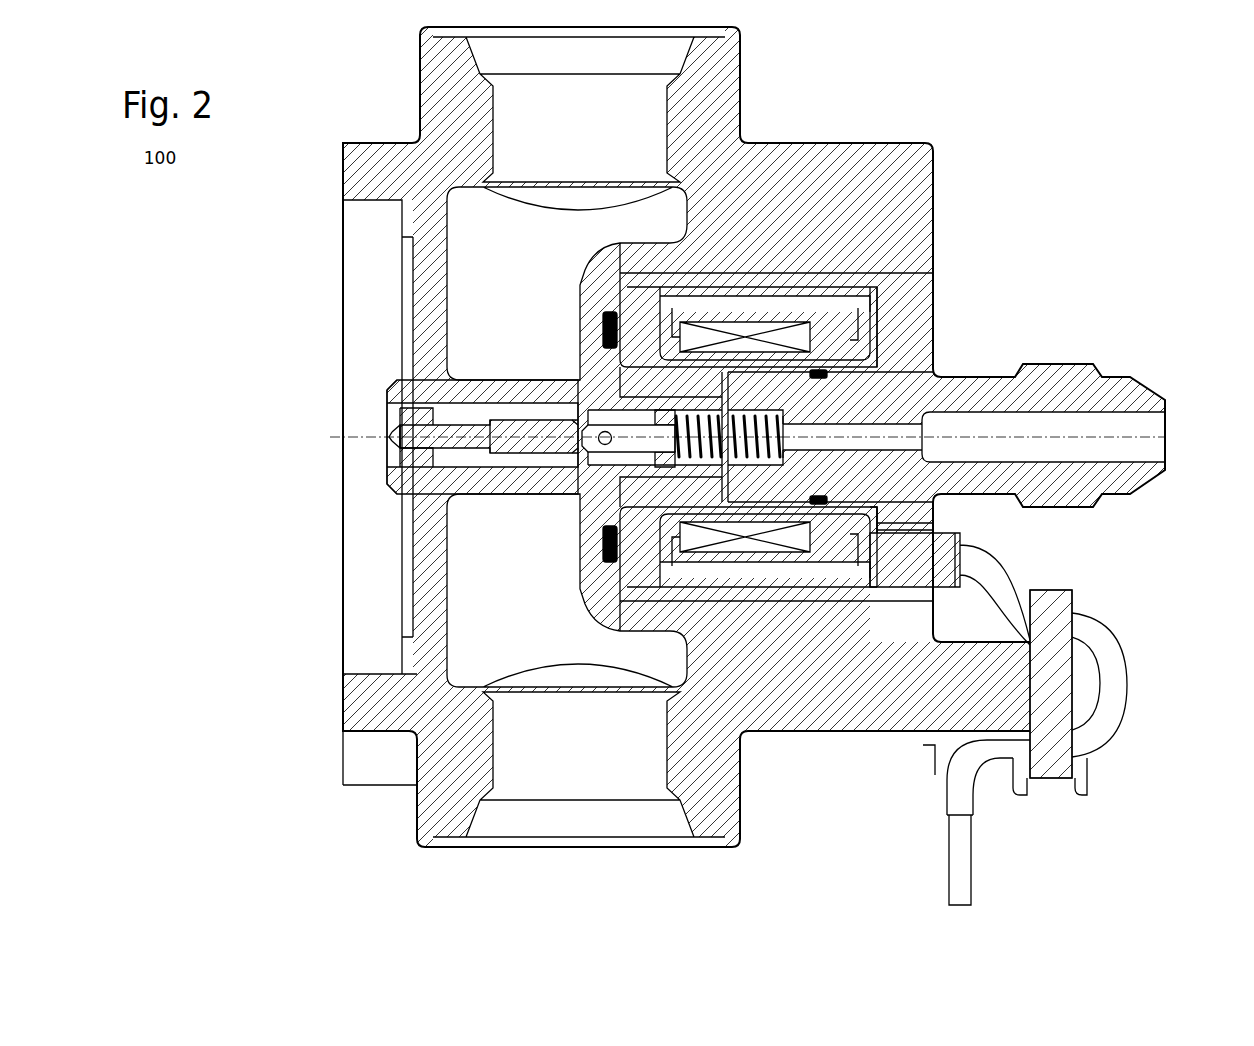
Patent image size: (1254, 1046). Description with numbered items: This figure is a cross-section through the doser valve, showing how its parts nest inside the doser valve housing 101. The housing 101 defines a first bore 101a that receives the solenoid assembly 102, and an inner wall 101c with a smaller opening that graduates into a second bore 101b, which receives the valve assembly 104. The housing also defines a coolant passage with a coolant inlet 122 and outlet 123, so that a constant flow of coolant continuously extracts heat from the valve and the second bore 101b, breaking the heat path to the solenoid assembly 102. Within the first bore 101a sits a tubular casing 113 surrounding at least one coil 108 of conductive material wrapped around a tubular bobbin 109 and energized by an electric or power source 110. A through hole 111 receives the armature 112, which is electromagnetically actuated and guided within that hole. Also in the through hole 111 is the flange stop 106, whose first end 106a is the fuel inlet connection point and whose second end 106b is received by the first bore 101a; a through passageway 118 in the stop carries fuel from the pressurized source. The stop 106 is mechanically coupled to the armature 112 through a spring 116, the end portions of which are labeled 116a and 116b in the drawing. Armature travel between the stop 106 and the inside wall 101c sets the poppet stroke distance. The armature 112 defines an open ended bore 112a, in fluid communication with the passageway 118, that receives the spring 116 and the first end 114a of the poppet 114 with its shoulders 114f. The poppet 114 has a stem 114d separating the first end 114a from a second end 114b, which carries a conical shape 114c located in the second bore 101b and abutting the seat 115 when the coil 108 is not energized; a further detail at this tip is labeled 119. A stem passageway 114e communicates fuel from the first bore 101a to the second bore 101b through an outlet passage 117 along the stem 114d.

The doser valve housing 101 is at (777, 152).
The first bore 101a is at (818, 273).
The second bore 101b is at (478, 472).
The inner wall 101c is at (603, 368).
The solenoid assembly 102 is at (893, 268).
The valve assembly 104 is at (400, 497).
The flange stop 106 is at (968, 377).
The first end of the flange stop 106a is at (1155, 430).
The second end of the flange stop 106b is at (914, 312).
The coil of conductive material 108 is at (745, 540).
The tubular bobbin 109 is at (860, 530).
The power source 110 is at (965, 853).
The through hole 111 is at (870, 509).
The armature 112 is at (660, 462).
The open ended bore 112a is at (697, 468).
The tubular casing 113 is at (927, 275).
The poppet 114 is at (440, 420).
The first end of the poppet 114a is at (663, 458).
The second end of the poppet 114b is at (395, 438).
The conical shape 114c is at (393, 433).
The stem 114d is at (480, 428).
The stem passageway 114e is at (627, 437).
The shoulders 114f is at (650, 462).
The seat 115 is at (393, 432).
The spring 116 is at (690, 420).
The spring end 116a is at (775, 437).
The seal ring 116b is at (607, 557).
The outlet passage 117 is at (604, 441).
The through passageway 118 is at (1100, 447).
The nozzle tip 119 is at (390, 436).
The coolant inlet 122 is at (528, 800).
The coolant outlet 123 is at (528, 88).